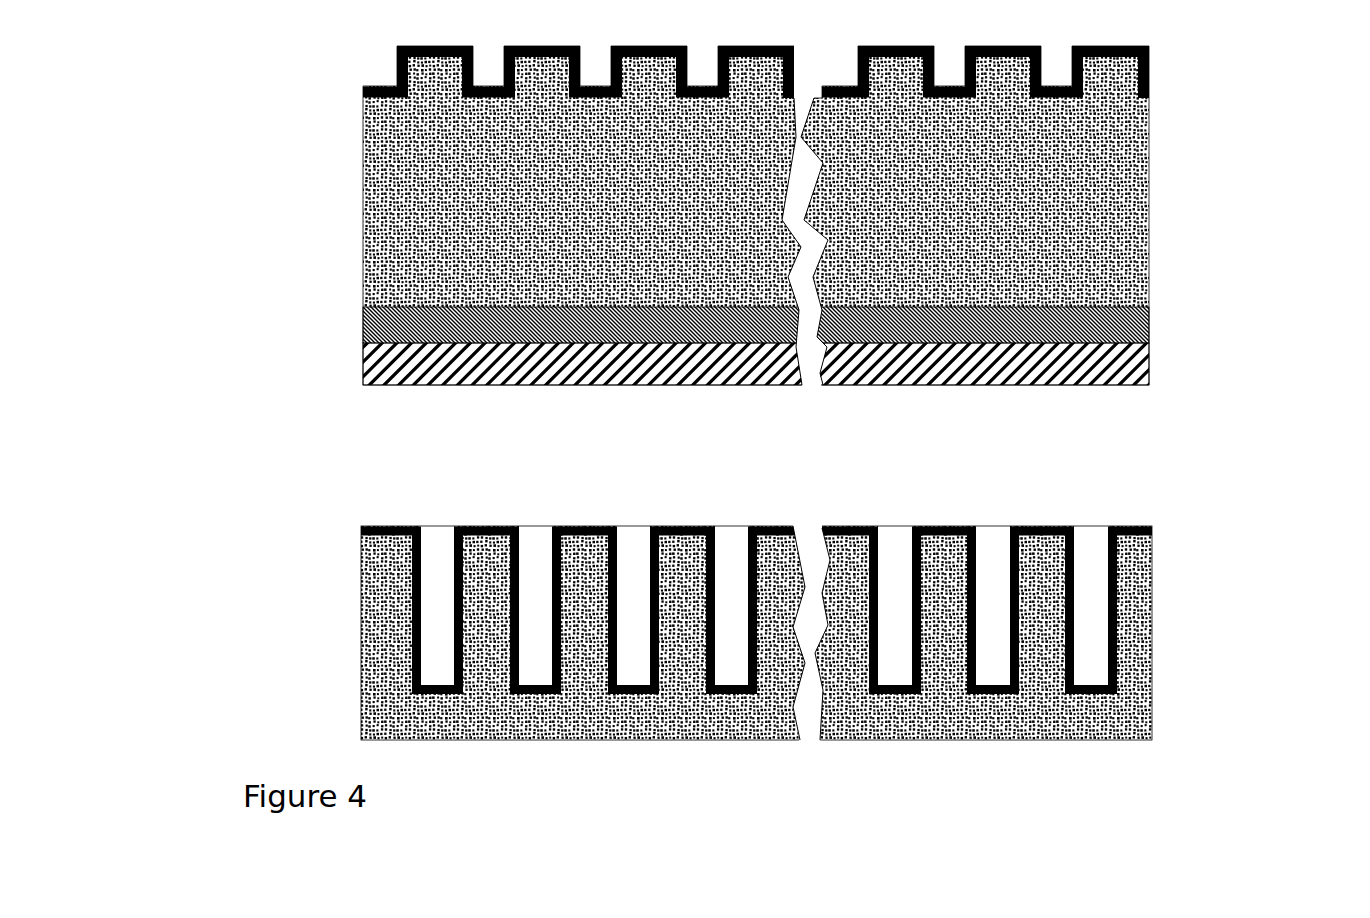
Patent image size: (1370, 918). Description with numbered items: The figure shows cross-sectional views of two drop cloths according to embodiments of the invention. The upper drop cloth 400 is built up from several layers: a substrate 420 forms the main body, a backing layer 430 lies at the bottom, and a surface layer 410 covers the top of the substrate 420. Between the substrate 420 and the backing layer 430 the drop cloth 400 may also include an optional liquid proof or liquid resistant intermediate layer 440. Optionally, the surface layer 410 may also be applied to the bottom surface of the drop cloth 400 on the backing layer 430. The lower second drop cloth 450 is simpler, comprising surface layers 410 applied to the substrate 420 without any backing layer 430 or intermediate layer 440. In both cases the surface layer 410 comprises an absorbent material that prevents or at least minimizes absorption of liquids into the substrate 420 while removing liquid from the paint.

The drop cloth 400 is at (662, 215).
The surface layer 410 is at (1150, 68).
The substrate 420 is at (1152, 168).
The backing layer 430 is at (832, 362).
The intermediate layer 440 is at (1152, 315).
The second drop cloth 450 is at (663, 633).